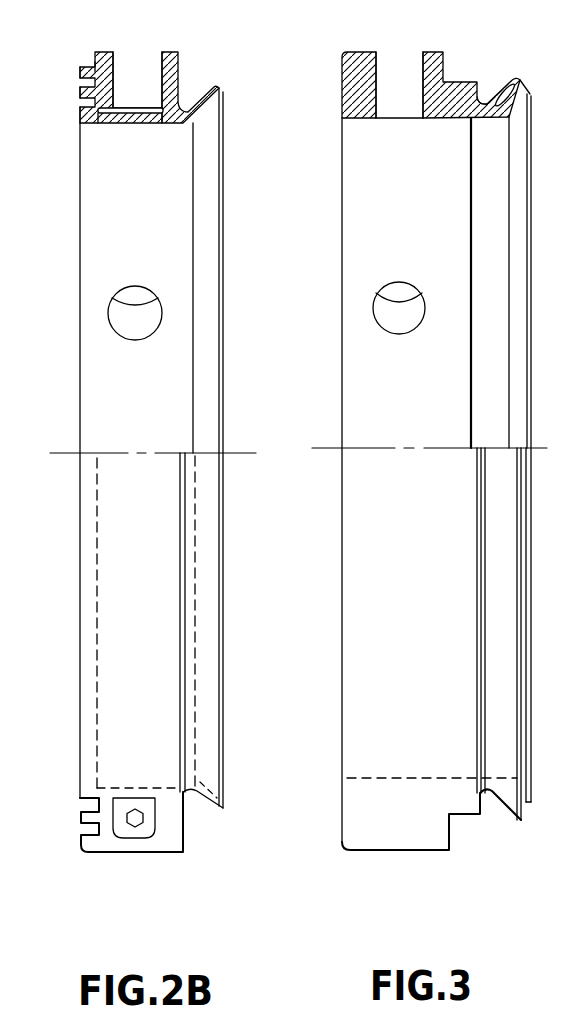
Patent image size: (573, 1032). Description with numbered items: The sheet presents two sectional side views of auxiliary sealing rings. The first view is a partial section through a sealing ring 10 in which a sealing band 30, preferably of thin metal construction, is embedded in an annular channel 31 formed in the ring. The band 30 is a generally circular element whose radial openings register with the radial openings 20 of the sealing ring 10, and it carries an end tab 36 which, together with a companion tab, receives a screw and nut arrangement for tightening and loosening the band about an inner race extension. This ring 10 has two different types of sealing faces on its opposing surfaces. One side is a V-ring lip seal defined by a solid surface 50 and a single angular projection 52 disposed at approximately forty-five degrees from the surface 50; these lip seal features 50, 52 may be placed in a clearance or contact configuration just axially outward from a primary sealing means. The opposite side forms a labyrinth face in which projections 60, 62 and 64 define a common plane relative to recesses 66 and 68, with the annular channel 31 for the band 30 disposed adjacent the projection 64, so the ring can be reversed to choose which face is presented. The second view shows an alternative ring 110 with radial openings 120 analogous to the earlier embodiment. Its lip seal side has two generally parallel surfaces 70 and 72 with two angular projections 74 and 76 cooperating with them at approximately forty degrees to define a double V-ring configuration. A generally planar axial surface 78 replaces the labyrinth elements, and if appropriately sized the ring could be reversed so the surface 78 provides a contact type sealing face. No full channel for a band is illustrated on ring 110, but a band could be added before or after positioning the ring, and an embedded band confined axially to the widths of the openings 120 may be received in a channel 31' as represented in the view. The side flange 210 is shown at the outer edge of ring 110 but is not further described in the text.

In FIG. 2B, the sealing ring 10 is at (65, 293).
In FIG. 2B, the radial openings 20 is at (152, 66).
In FIG. 2B, the sealing band 30 is at (137, 108).
In FIG. 2B, the annular channel 31 is at (101, 134).
In FIG. 2B, the end tab 36 is at (137, 857).
In FIG. 2B, the solid surface 50 is at (180, 62).
In FIG. 2B, the angular projection 52 is at (222, 90).
In FIG. 2B, the projection 60 is at (92, 62).
In FIG. 2B, the projection 62 is at (82, 80).
In FIG. 2B, the projection 64 is at (80, 115).
In FIG. 2B, the recess 66 is at (92, 72).
In FIG. 2B, the recess 68 is at (90, 98).
In FIG. 3, the parallel surface 70 is at (438, 62).
In FIG. 3, the parallel surface 72 is at (482, 100).
In FIG. 3, the angular projection 74 is at (512, 82).
In FIG. 3, the angular projection 76 is at (524, 93).
In FIG. 3, the planar surface 78 is at (340, 72).
In FIG. 3, the sealing ring 110 is at (317, 290).
In FIG. 3, the radial openings 120 is at (420, 66).
In FIG. 3, the side flange 210 is at (549, 448).
In FIG. 3, the channel 31' is at (405, 135).